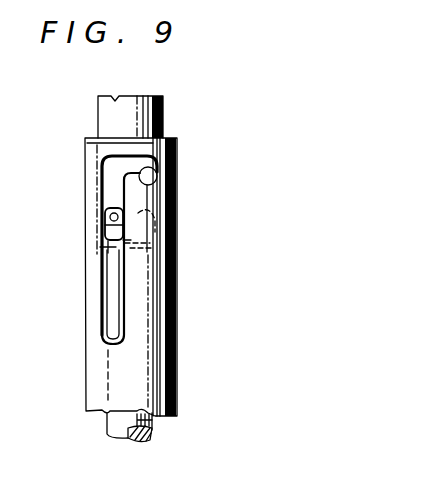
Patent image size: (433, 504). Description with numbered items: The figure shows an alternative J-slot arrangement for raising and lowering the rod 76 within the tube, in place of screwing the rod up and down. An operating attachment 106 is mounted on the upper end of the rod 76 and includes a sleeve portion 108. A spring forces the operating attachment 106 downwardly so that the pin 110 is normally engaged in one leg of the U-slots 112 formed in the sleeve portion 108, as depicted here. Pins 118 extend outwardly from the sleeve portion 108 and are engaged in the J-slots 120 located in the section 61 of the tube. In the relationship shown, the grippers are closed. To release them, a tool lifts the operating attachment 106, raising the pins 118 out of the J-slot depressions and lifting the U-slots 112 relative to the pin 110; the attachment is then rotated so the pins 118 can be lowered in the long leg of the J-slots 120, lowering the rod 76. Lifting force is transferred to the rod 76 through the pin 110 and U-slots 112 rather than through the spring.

The section of the tube 61 is at (142, 373).
The operating attachment 106 is at (147, 117).
The J-slots 120 is at (117, 315).
The pins 118 is at (148, 176).
The U-slots 112 is at (148, 232).
The pin 110 is at (110, 216).
The sleeve portion 108 is at (107, 250).
The rod 76 is at (153, 428).